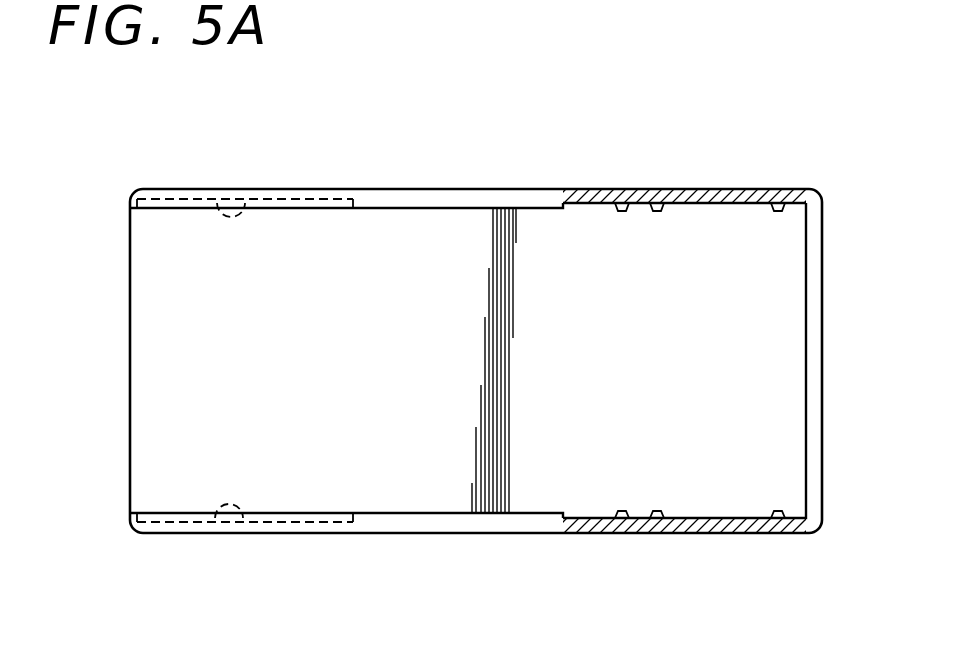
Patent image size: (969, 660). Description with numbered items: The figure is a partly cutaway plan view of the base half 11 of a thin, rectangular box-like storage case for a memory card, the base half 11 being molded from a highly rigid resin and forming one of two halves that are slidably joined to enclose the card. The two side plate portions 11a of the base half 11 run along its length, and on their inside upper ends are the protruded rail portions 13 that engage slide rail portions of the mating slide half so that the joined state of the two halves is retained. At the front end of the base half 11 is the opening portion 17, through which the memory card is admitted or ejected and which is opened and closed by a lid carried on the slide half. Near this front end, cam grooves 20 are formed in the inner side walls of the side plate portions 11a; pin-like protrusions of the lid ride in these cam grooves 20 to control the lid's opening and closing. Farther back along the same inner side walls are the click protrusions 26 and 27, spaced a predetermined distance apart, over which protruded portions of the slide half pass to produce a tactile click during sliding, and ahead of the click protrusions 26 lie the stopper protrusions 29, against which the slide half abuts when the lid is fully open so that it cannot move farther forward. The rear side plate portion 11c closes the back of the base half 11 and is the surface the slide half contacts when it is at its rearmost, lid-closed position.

The base half 11 is at (458, 188).
The side plate portion 11a is at (587, 189).
The rear side plate portion 11c is at (813, 363).
The protruded rail portion 13 is at (435, 207).
The opening portion 17 is at (106, 366).
The cam groove 20 is at (250, 204).
The click protrusion 26 is at (657, 212).
The click protrusion 27 is at (778, 212).
The stopper protrusion 29 is at (622, 212).